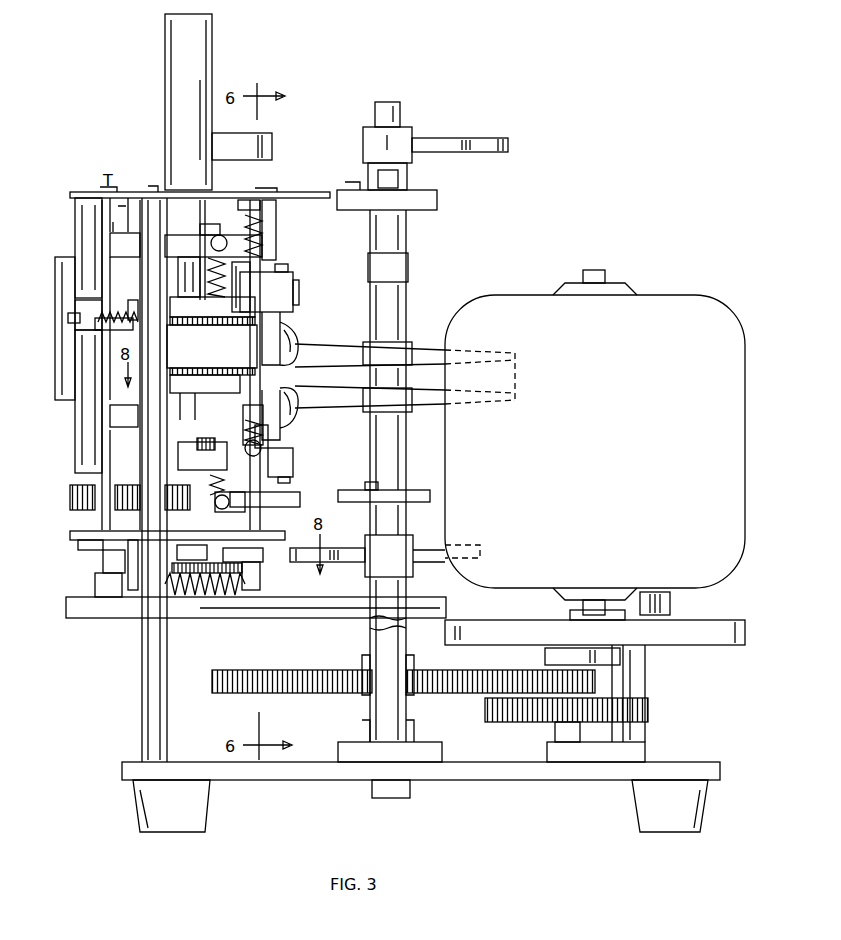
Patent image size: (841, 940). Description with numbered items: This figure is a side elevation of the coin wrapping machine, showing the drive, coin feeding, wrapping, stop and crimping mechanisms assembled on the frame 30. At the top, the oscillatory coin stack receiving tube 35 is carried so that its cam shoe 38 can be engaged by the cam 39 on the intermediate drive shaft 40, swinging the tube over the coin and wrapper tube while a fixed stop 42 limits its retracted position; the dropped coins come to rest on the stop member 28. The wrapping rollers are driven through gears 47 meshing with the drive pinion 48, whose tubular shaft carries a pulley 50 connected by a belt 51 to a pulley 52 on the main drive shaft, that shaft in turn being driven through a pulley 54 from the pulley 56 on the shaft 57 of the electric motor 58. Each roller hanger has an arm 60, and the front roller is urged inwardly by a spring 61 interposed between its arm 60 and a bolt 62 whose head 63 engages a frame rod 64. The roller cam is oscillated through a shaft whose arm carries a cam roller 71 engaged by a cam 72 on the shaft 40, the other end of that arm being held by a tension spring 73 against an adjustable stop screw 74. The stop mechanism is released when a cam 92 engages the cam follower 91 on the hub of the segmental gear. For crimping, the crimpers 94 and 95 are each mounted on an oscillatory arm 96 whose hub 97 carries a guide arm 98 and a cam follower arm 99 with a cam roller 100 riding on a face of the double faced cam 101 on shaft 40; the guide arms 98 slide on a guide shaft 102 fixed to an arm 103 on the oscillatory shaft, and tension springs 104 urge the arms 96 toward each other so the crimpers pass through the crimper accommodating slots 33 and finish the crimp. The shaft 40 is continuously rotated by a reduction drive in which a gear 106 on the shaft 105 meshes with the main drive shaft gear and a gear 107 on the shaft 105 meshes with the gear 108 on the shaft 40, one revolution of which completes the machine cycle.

The stop member 28 is at (220, 439).
The frame 30 is at (74, 192).
The crimper accommodating slots 33 is at (130, 205).
The coin stack receiving tube 35 is at (212, 56).
The cam shoe 38 is at (272, 148).
The cam 39 is at (508, 144).
The intermediate drive shaft 40 is at (402, 118).
The fixed stop 42 is at (243, 190).
The gear 47 is at (70, 495).
The drive pinion 48 is at (127, 506).
The pulley 50 is at (80, 597).
The belt 51 is at (332, 618).
The pulley 52 is at (672, 600).
The pulley 54 is at (735, 620).
The pulley 56 is at (648, 648).
The motor shaft 57 is at (545, 655).
The electric motor 58 is at (732, 308).
The arm 60 is at (75, 307).
The spring 61 is at (112, 330).
The bolt 62 is at (68, 318).
The head 63 is at (130, 303).
The frame rod 64 is at (125, 245).
The cam roller 71 is at (262, 556).
The cam 72 is at (345, 562).
The tension spring 73 is at (230, 597).
The adjustable stop screw 74 is at (260, 582).
The cam follower 91 is at (298, 494).
The cam 92 is at (345, 490).
The crimper 94 is at (100, 248).
The crimper 95 is at (100, 424).
The oscillatory arm 96 is at (200, 232).
The hub 97 is at (240, 270).
The guide arm 98 is at (213, 365).
The cam follower arm 99 is at (293, 278).
The cam roller 100 is at (300, 338).
The double faced cam 101 is at (425, 340).
The guide shaft 102 is at (187, 266).
The arm 103 is at (205, 397).
The tension spring 104 is at (260, 235).
The shaft 105 is at (555, 730).
The gear 106 is at (485, 711).
The gear 107 is at (600, 680).
The gear 108 is at (262, 668).